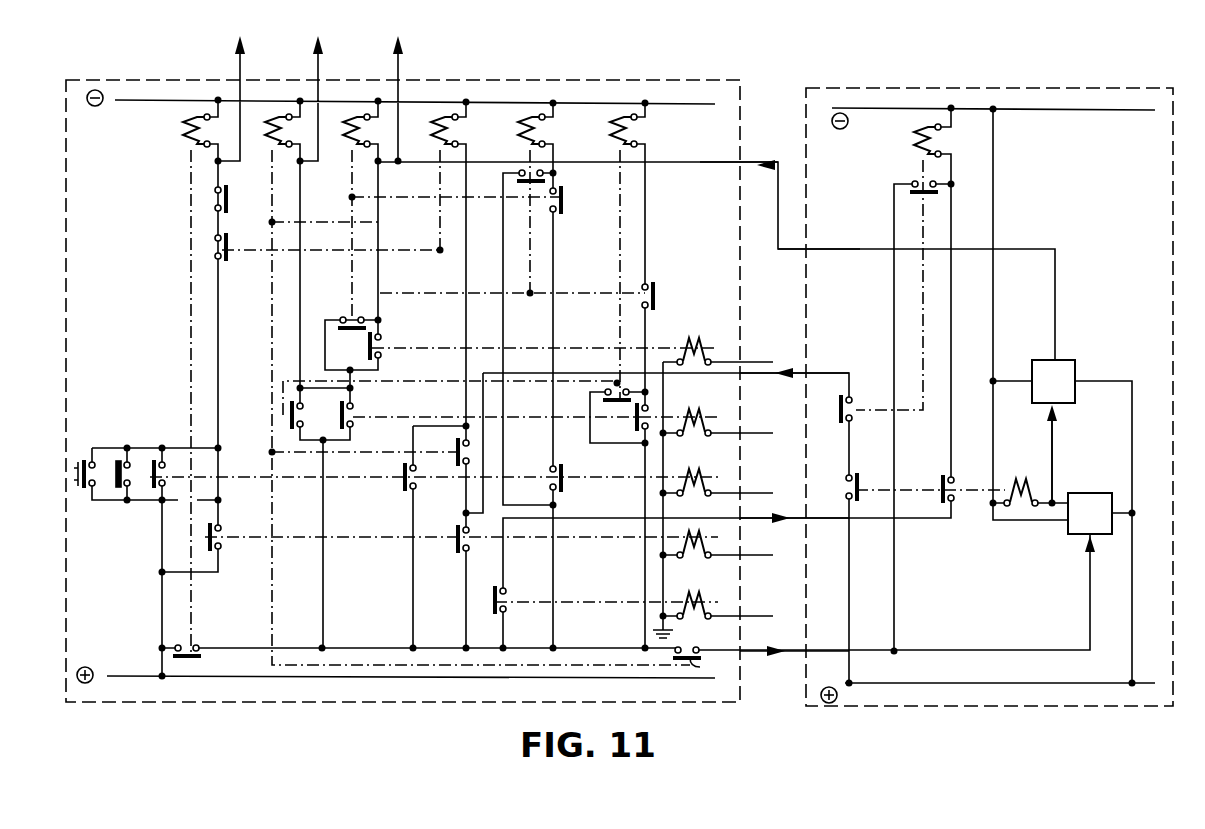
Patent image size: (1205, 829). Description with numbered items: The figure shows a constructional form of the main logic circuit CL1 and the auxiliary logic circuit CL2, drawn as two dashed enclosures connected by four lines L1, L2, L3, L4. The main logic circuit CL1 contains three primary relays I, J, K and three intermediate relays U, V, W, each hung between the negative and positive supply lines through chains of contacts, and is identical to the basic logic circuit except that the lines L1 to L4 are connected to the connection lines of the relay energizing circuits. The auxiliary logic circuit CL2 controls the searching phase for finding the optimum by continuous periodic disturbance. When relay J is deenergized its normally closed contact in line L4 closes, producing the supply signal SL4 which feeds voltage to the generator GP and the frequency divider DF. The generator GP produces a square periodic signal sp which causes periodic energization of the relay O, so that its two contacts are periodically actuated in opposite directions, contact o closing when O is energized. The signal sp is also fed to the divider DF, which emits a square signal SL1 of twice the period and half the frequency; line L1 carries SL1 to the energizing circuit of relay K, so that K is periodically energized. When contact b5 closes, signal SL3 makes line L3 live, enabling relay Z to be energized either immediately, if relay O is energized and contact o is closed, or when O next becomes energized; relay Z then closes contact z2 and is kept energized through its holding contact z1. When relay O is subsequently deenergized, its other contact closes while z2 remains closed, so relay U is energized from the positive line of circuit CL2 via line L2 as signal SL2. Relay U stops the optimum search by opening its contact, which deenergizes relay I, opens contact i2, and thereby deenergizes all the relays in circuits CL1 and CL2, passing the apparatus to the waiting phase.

The main logic circuit CL1 is at (603, 80).
The auxiliary logic circuit CL2 is at (968, 88).
The primary relay I is at (200, 130).
The primary relay J is at (282, 130).
The primary relay K is at (363, 130).
The intermediate relay U is at (451, 130).
The intermediate relay V is at (538, 130).
The intermediate relay W is at (633, 130).
The relay Z is at (935, 140).
The relay O is at (1021, 482).
The frequency divider DF is at (1053, 381).
The generator GP is at (1090, 513).
The logic signal SL1 is at (739, 148).
The logic signal SL2 is at (770, 386).
The logic signal SL3 is at (770, 536).
The logic signal SL4 is at (770, 666).
The line L1 is at (836, 249).
The line L2 is at (821, 373).
The line L3 is at (826, 510).
The line L4 is at (815, 651).
The contact z1 is at (915, 175).
The contact z2 is at (834, 409).
The contact o is at (935, 488).
The contact b5 is at (486, 600).
The contact i2 is at (193, 660).
The square periodic signal sp is at (1062, 456).